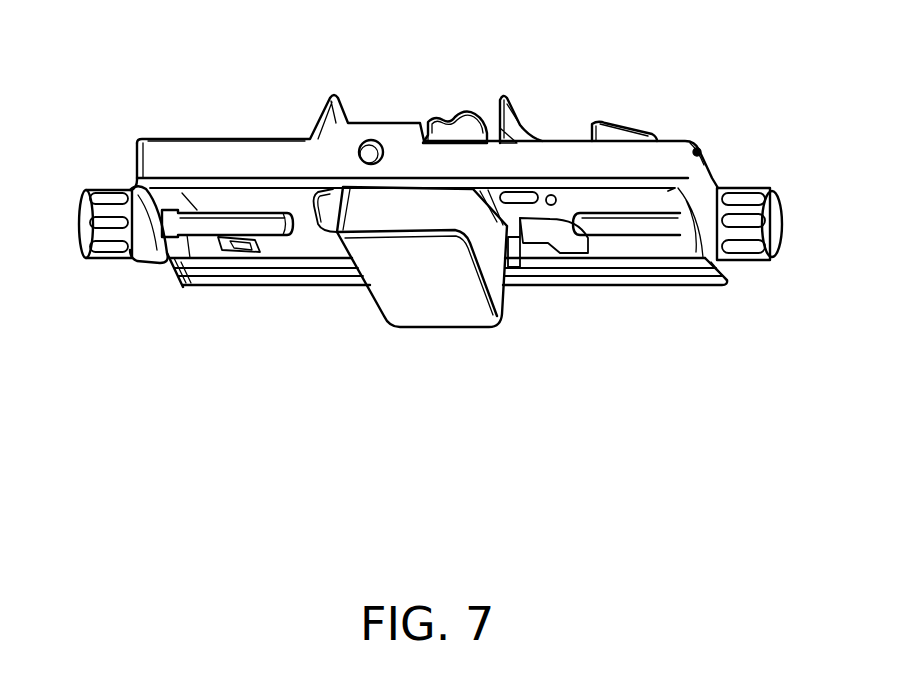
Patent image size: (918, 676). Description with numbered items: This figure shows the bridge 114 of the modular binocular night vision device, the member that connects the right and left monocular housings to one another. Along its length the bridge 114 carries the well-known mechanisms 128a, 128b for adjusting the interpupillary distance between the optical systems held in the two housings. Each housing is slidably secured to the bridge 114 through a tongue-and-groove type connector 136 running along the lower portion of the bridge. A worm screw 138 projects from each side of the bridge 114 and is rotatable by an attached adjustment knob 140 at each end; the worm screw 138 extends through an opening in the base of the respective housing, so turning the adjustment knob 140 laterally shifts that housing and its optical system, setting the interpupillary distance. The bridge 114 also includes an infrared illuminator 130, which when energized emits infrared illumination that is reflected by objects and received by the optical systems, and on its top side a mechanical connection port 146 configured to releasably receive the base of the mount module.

The bridge 114 is at (667, 140).
The mechanism for adjusting the interpupillary distance 128a is at (757, 192).
The mechanism for adjusting the interpupillary distance 128b is at (107, 195).
The infrared (IR) illuminator 130 is at (367, 147).
The tongue-and-groove type connector 136 is at (280, 260).
The worm screw 138 is at (197, 223).
The adjustment knob 140 is at (110, 260).
The mechanical connection port 146 is at (410, 123).